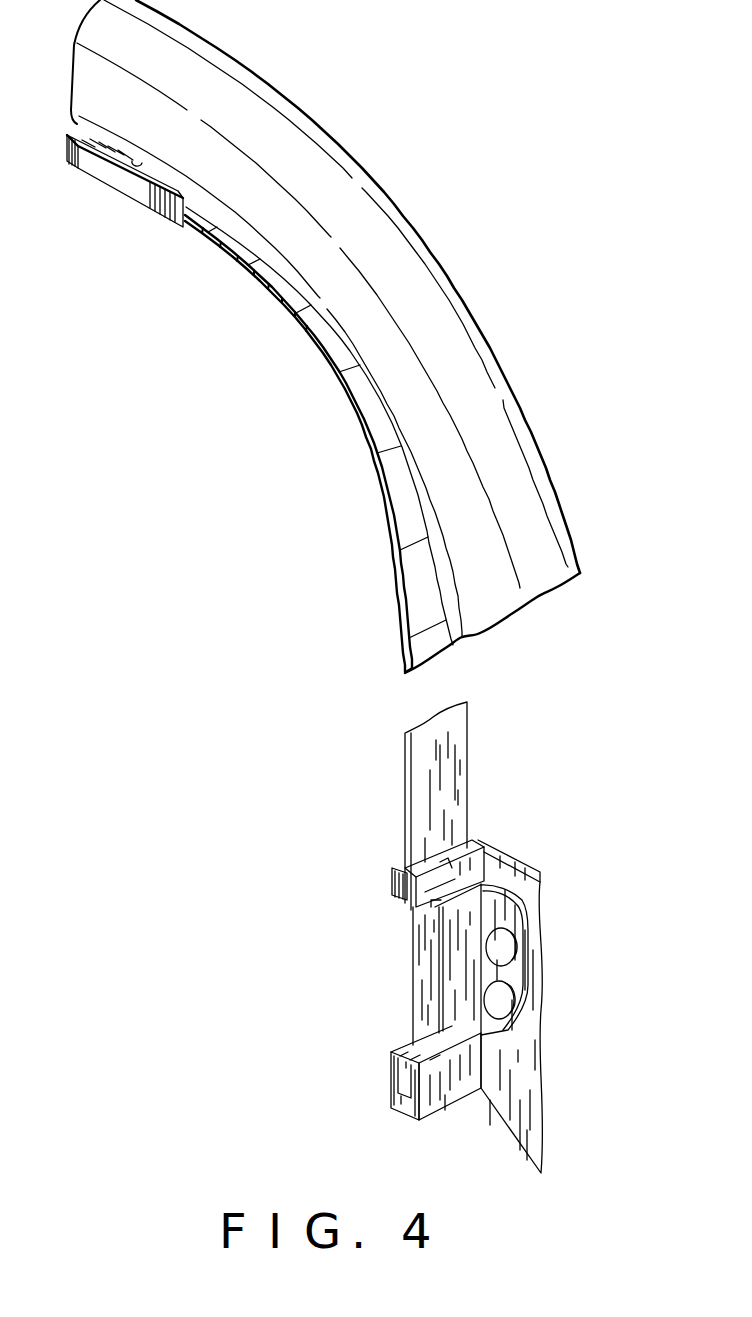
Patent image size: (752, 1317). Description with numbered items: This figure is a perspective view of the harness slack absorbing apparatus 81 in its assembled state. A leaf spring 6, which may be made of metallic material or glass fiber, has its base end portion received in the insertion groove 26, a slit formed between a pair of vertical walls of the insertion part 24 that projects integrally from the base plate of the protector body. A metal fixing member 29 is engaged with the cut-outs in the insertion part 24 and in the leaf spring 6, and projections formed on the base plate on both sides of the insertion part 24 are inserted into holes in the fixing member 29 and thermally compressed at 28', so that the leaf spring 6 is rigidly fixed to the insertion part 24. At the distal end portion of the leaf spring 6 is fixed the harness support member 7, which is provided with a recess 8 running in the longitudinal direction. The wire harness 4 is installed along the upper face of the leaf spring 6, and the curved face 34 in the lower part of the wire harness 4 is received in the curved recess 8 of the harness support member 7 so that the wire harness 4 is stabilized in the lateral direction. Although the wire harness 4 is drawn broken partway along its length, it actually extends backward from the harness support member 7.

The wire harness 4 is at (531, 425).
The leaf spring 6 is at (370, 455).
The harness support member 7 is at (100, 186).
The recess 8 is at (150, 190).
The curved face 34 is at (148, 158).
The harness slack absorbing apparatus 81 is at (282, 370).
The insertion part 24 is at (390, 882).
The insertion groove 26 is at (447, 857).
The thermally compressed projections 28' is at (536, 960).
The fixing member 29 is at (410, 980).